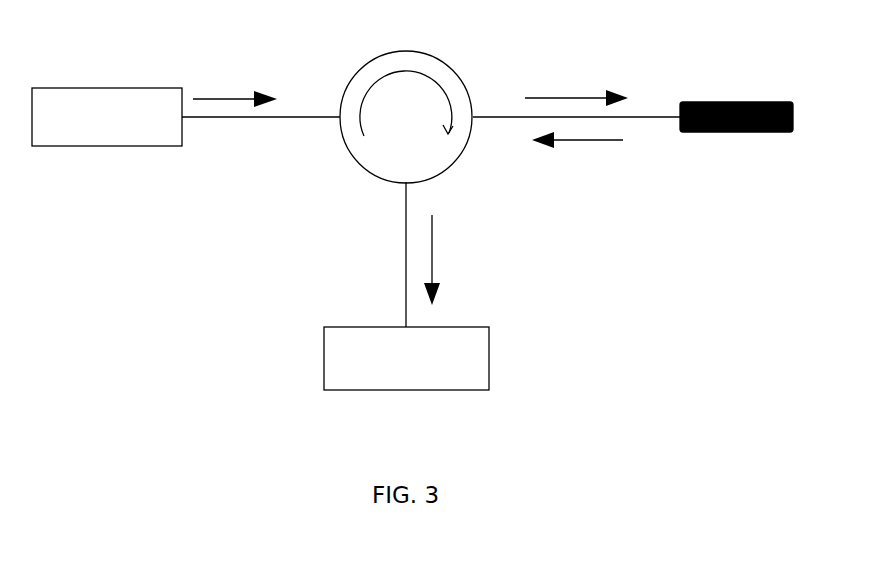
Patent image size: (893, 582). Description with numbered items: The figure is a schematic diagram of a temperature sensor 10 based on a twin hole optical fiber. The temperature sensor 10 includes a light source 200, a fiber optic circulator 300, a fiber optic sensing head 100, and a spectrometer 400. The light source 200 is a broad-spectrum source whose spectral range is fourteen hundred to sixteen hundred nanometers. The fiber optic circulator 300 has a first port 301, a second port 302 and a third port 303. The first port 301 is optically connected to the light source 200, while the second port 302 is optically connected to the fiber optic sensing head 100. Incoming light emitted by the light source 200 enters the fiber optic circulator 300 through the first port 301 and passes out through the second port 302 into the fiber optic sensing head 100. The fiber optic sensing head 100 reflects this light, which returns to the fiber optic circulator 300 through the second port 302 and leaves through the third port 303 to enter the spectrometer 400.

The temperature sensor 10 is at (413, 446).
The fiber optic sensing head 100 is at (735, 132).
The light source 200 is at (107, 146).
The fiber optic circulator 300 is at (406, 51).
The first port 301 is at (263, 102).
The second port 302 is at (576, 102).
The third port 303 is at (384, 254).
The spectrometer 400 is at (489, 358).